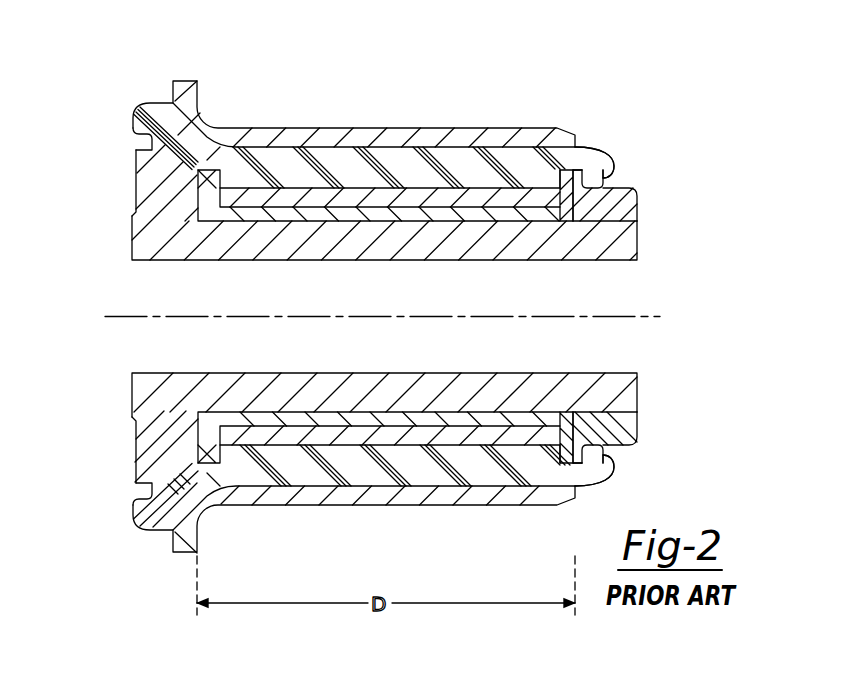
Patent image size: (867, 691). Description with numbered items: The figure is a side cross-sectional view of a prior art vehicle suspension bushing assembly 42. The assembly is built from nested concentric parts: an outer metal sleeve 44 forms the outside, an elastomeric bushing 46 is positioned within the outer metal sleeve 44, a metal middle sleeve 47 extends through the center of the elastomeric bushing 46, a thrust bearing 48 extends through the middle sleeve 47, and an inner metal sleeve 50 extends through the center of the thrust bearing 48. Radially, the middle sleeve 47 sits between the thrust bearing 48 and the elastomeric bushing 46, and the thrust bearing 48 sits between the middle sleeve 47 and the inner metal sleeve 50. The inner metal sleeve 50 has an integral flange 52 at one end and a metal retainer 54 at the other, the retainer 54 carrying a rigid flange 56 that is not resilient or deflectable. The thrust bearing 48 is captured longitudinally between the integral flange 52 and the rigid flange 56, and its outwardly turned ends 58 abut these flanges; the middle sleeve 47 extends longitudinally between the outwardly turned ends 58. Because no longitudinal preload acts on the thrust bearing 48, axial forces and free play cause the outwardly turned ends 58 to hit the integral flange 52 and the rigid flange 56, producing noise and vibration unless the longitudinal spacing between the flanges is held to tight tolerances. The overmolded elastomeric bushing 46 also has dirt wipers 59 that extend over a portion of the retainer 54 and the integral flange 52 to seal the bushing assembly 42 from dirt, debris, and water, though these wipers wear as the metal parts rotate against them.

The bushing assembly 42 is at (135, 62).
The outer metal sleeve 44 is at (402, 130).
The elastomeric bushing 46 is at (280, 160).
The middle sleeve 47 is at (372, 195).
The thrust bearing 48 is at (430, 418).
The inner metal sleeve 50 is at (290, 385).
The integral flange 52 is at (152, 187).
The retainer 54 is at (641, 207).
The rigid flange 56 is at (604, 160).
The outwardly turned ends 58 is at (197, 188).
The dirt wipers 59 is at (148, 134).